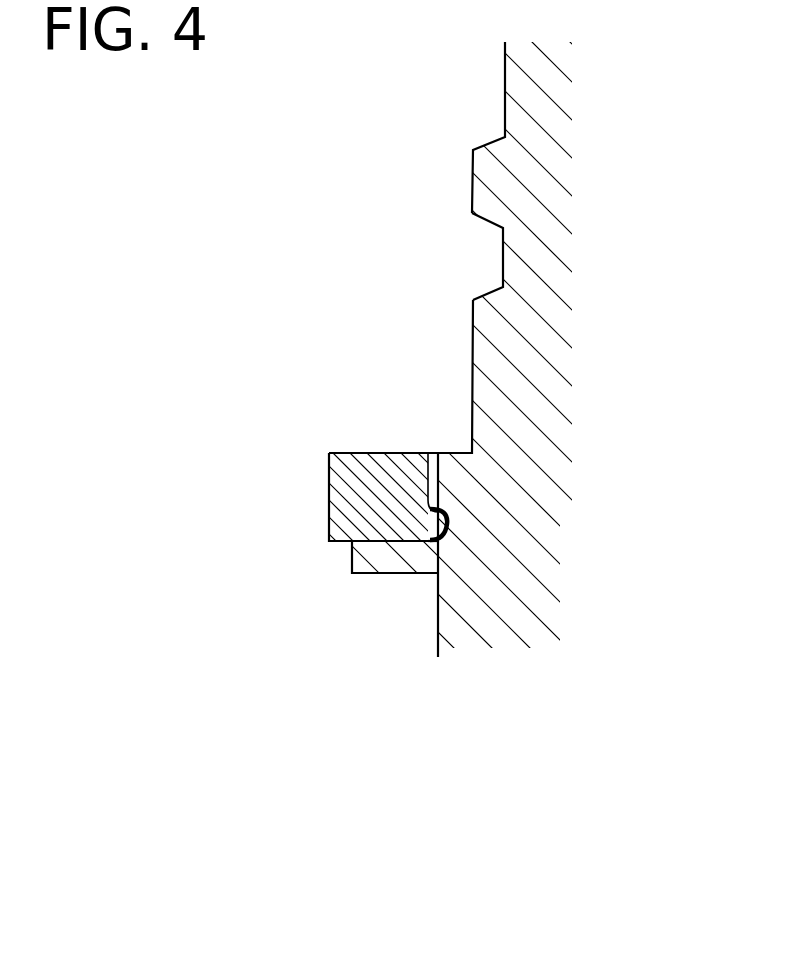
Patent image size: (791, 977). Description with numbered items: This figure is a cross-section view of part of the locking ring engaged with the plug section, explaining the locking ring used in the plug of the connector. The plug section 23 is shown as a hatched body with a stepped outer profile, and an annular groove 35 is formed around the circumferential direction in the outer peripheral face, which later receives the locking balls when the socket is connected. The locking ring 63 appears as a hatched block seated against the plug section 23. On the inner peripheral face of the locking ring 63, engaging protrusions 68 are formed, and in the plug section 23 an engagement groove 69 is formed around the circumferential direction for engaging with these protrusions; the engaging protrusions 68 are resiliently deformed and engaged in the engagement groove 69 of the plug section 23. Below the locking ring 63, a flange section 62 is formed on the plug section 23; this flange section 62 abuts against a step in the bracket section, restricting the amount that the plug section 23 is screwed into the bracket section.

The plug section 23 is at (490, 95).
The annular groove 35 is at (485, 222).
The locking ring 63 is at (306, 437).
The engagement groove 69 is at (432, 517).
The engaging protrusions 68 is at (425, 541).
The flange section 62 is at (357, 561).